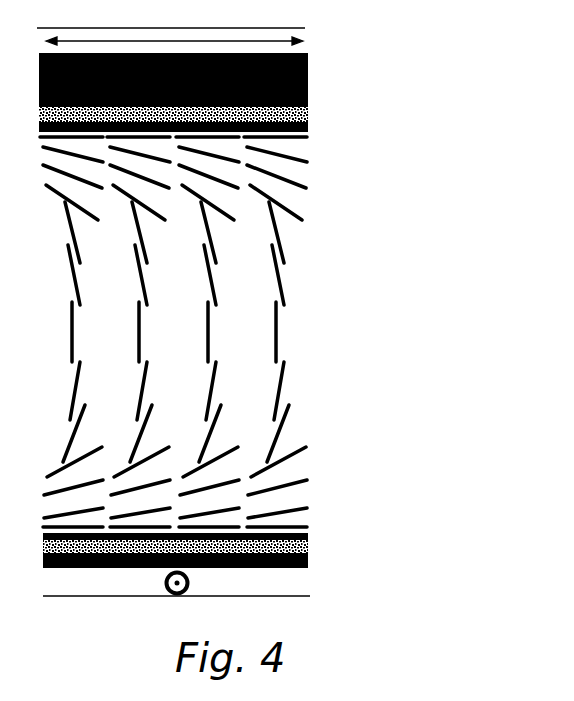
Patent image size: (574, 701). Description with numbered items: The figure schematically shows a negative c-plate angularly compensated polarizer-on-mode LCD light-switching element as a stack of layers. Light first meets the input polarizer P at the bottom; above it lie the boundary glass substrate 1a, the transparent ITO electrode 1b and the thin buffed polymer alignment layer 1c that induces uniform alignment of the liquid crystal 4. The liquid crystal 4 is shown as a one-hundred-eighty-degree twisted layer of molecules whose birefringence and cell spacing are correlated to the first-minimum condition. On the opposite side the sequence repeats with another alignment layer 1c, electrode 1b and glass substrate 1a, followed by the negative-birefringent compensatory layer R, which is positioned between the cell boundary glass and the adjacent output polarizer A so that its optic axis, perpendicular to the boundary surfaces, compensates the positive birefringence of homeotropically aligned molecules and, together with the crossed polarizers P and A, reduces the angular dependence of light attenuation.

The output polarizer A is at (307, 35).
The negative-birefringent compensatory layer R is at (308, 68).
The boundary glass substrate 1a is at (308, 99).
The transparent ITO electrode 1b is at (308, 113).
The polymer alignment layer 1c is at (310, 126).
The liquid crystal 4 is at (320, 152).
The input polarizer P is at (191, 585).